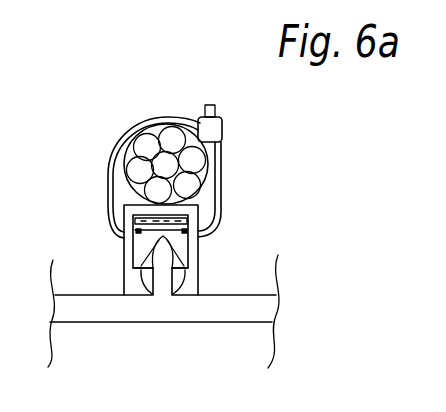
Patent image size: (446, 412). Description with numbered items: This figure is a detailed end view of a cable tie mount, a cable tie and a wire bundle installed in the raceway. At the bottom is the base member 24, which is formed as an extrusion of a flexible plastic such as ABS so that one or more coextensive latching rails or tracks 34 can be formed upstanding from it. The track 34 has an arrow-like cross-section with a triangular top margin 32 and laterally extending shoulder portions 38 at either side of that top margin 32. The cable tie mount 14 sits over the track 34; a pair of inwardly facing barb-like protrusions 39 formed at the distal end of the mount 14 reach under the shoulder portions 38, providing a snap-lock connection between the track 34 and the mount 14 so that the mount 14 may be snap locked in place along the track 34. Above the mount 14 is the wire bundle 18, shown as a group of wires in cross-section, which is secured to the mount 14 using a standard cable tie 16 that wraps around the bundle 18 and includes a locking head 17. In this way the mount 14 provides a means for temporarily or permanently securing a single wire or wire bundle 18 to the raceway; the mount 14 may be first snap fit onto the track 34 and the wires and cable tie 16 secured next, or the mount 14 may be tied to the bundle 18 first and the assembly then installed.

The cable tie mount 14 is at (127, 242).
The cable tie 16 is at (140, 128).
The locking head 17 is at (223, 127).
The wire bundle 18 is at (147, 147).
The base member 24 is at (245, 312).
The triangular top margin 32 is at (170, 250).
The latching rail or track 34 is at (162, 282).
The shoulder portion 38 is at (150, 270).
The barb-like protrusion 39 is at (150, 296).